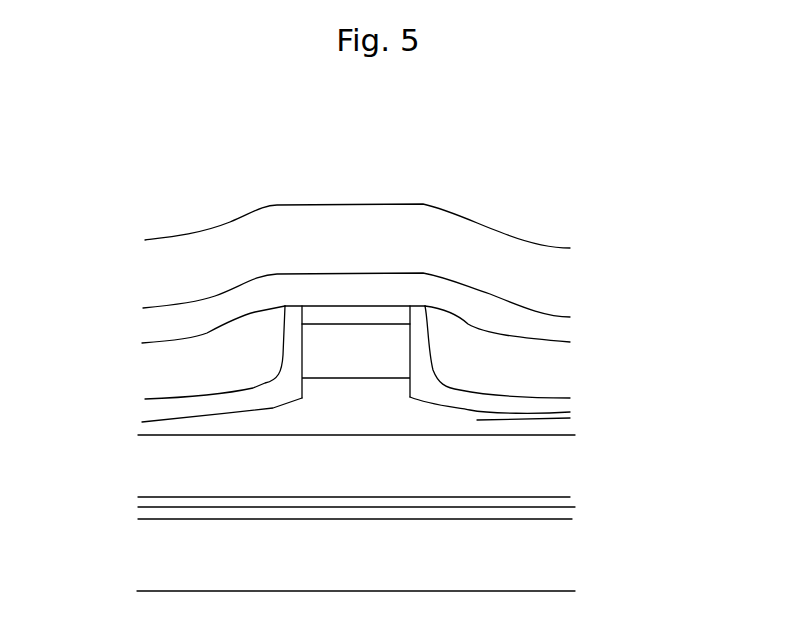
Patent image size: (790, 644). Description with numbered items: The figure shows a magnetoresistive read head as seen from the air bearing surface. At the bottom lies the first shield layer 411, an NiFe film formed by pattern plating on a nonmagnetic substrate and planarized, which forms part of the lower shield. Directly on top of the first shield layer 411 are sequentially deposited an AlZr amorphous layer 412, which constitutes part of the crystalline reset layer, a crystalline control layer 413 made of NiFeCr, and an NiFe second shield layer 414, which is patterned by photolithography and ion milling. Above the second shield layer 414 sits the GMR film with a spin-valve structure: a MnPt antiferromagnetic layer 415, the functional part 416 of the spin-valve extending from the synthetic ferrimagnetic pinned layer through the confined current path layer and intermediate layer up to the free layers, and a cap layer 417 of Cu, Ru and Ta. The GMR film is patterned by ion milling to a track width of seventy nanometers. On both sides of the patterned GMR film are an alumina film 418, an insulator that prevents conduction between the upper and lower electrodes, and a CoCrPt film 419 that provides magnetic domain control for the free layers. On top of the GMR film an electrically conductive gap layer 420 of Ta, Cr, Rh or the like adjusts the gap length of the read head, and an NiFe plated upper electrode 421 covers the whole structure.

The first shield layer 411 is at (540, 562).
The amorphous layer 412 is at (147, 515).
The crystalline control layer 413 is at (570, 498).
The second shield layer 414 is at (160, 462).
The antiferromagnetic layer 415 is at (570, 412).
The functional part of the spin-valve 416 is at (332, 323).
The cap layer 417 is at (329, 347).
The alumina film 418 is at (487, 398).
The CoCrPt film 419 is at (500, 360).
The electrically conductive gap layer 420 is at (490, 308).
The upper electrode 421 is at (430, 247).